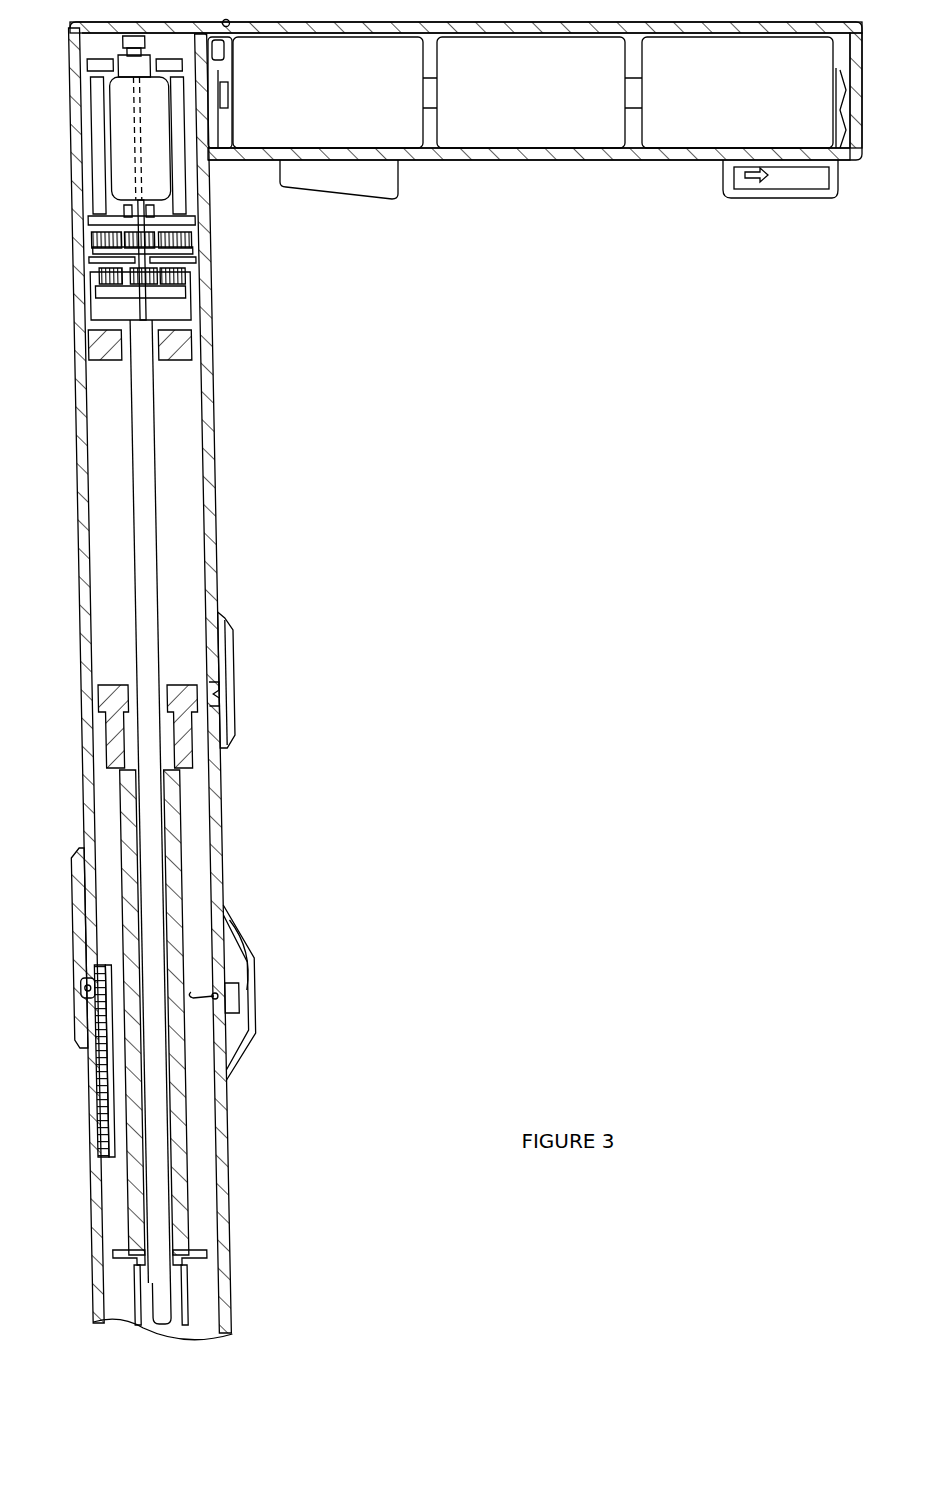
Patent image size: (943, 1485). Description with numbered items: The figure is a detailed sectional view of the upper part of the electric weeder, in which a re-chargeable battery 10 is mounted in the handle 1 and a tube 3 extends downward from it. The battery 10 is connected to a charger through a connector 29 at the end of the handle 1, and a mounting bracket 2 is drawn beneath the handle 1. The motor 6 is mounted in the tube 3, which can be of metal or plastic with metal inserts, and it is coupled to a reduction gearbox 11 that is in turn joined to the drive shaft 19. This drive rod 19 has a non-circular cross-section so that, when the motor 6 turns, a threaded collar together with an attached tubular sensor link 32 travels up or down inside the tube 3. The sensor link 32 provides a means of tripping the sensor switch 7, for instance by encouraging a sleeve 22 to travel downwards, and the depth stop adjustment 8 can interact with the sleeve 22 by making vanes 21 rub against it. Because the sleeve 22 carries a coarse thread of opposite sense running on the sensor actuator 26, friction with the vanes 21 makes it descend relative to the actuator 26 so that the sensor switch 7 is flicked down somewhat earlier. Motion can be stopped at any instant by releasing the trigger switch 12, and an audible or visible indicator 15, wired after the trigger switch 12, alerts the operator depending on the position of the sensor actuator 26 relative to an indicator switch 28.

The handle 1 is at (728, 25).
The mounting bracket 2 is at (382, 186).
The tube 3 is at (208, 472).
The motor 6 is at (125, 136).
The sensor switch 7 is at (230, 998).
The depth stop adjustment 8 is at (88, 990).
The re-chargeable battery 10 is at (533, 92).
The reduction gearbox 11 is at (108, 290).
The trigger switch 12 is at (327, 160).
The indicator 15 is at (231, 23).
The drive shaft 19 is at (143, 418).
The vanes 21 is at (107, 1085).
The sleeve 22 is at (112, 744).
The sensor actuator 26 is at (185, 1125).
The indicator switch 28 is at (218, 688).
The connector 29 is at (803, 211).
The tubular sensor link 32 is at (133, 1304).